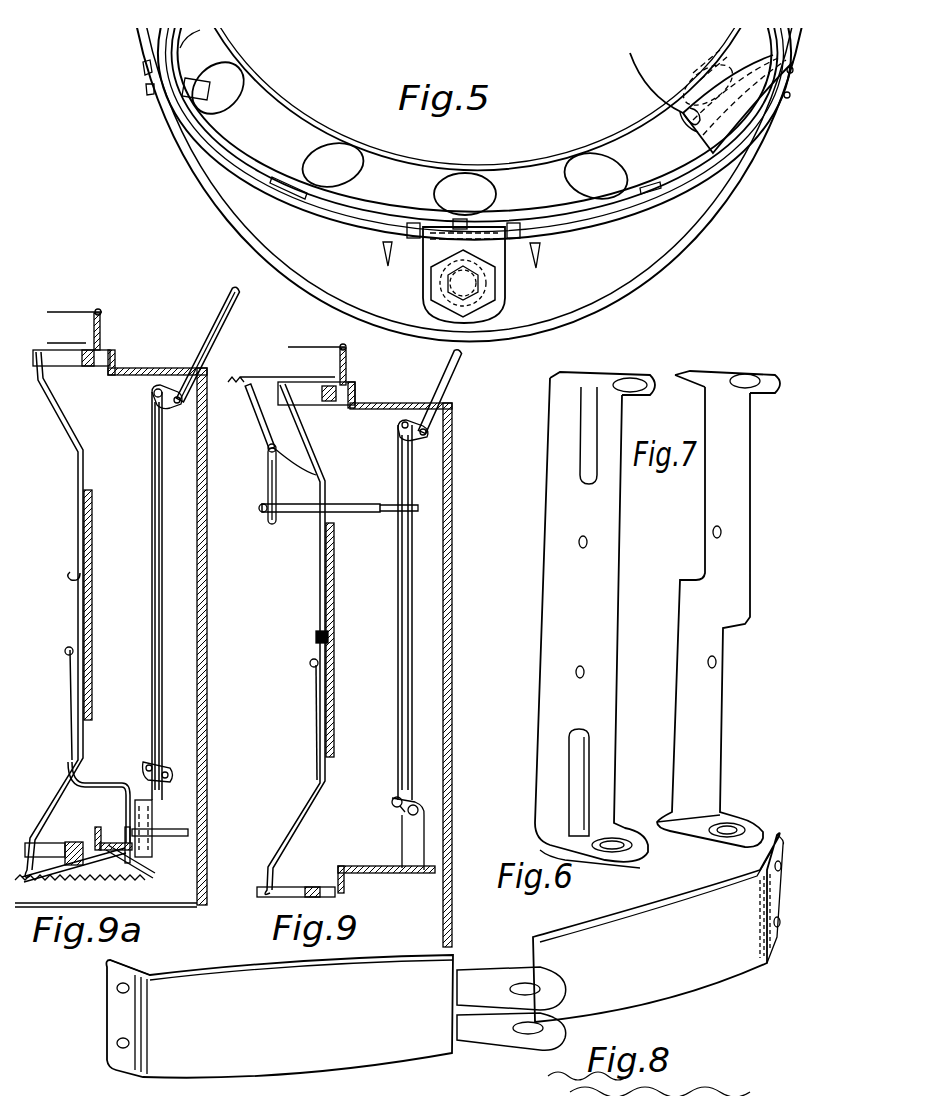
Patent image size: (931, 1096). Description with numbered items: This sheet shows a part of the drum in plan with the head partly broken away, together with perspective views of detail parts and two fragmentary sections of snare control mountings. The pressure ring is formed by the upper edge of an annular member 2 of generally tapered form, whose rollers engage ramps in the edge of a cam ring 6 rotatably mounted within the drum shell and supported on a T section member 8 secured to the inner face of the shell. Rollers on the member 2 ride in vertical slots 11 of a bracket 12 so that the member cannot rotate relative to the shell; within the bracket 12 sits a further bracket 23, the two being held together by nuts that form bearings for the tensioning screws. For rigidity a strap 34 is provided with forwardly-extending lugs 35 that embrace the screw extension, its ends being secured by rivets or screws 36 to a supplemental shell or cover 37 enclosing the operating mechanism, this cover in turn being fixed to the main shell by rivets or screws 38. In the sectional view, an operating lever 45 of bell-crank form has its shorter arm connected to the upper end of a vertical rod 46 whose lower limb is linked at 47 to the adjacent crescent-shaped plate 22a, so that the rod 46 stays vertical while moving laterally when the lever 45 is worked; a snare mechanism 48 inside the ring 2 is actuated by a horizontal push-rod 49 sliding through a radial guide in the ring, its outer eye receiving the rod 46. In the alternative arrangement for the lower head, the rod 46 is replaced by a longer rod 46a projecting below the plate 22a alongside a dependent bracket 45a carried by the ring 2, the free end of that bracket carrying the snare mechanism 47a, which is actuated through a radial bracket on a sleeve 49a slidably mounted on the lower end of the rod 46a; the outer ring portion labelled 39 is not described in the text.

In FIG. 9A, the annular member 2 is at (60, 420).
In FIG. 9, the annular member 2 is at (312, 462).
In FIG. 9A, the cam ring 6 is at (95, 555).
In FIG. 9, the cam ring 6 is at (334, 590).
In FIG. 9, the T section member 8 is at (316, 638).
In FIG. 6, the vertical slots 11 is at (583, 472).
In FIG. 6, the bracket 12 is at (595, 620).
In FIG. 9A, the crescent-shaped plate 22a is at (122, 370).
In FIG. 9, the crescent-shaped plate 22a is at (358, 408).
In FIG. 7, the further bracket 23 is at (718, 609).
In FIG. 8, the strap 34 is at (444, 955).
In FIG. 8, the forwardly-extending lugs 35 is at (468, 999).
In FIG. 5, the rivets or screws 36 is at (148, 92).
In FIG. 5, the supplemental shell or cover 37 is at (220, 212).
In FIG. 5, the rivets or screws 38 is at (143, 66).
In FIG. 5, the outer ring 39 is at (286, 258).
In FIG. 9A, the operating lever 45 is at (204, 358).
In FIG. 9, the operating lever 45 is at (453, 375).
In FIG. 9A, the dependent bracket 45a is at (95, 786).
In FIG. 9, the vertical rod 46 is at (411, 568).
In FIG. 9A, the longer rod 46a is at (158, 560).
In FIG. 9A, the link 47 is at (155, 766).
In FIG. 9, the link 47 is at (398, 810).
In FIG. 9A, the snare mechanism 47a is at (112, 856).
In FIG. 9, the snare mechanism 48 is at (266, 504).
In FIG. 9, the horizontal push-rod 49 is at (414, 507).
In FIG. 9A, the sleeve 49a is at (152, 848).